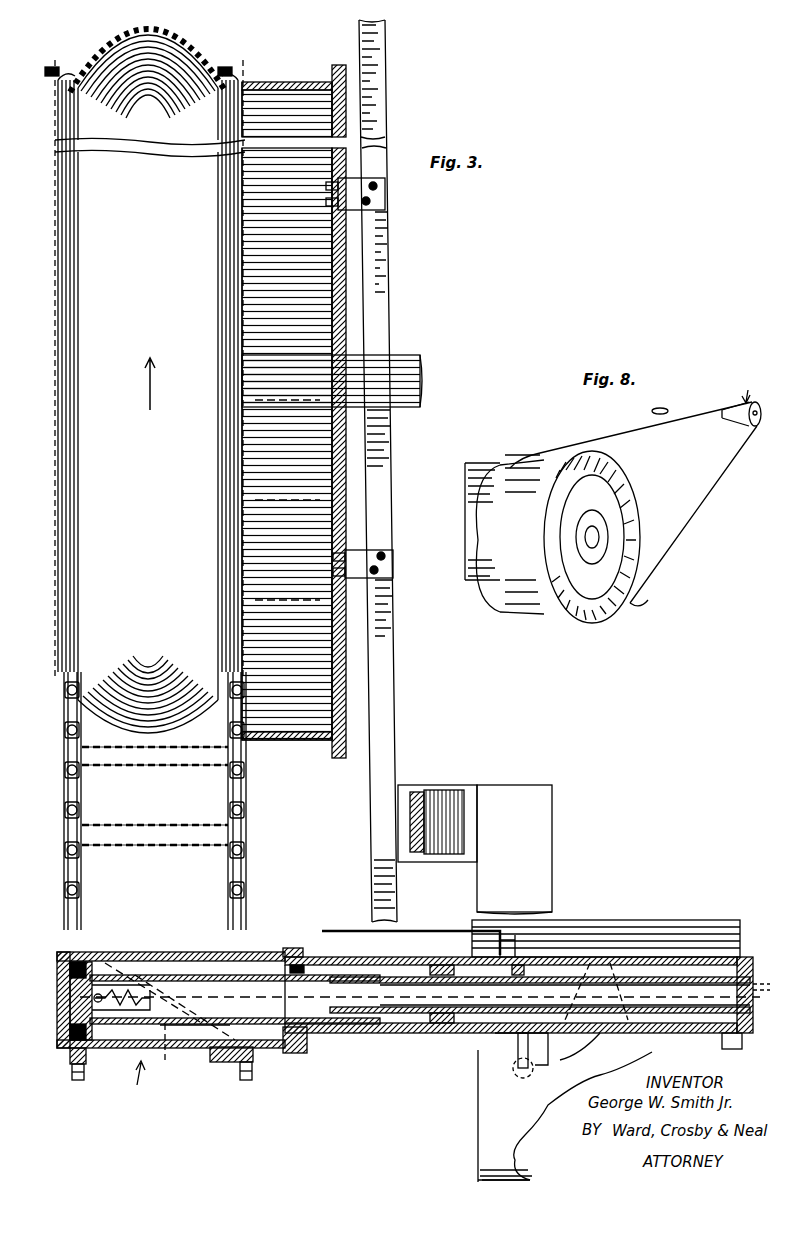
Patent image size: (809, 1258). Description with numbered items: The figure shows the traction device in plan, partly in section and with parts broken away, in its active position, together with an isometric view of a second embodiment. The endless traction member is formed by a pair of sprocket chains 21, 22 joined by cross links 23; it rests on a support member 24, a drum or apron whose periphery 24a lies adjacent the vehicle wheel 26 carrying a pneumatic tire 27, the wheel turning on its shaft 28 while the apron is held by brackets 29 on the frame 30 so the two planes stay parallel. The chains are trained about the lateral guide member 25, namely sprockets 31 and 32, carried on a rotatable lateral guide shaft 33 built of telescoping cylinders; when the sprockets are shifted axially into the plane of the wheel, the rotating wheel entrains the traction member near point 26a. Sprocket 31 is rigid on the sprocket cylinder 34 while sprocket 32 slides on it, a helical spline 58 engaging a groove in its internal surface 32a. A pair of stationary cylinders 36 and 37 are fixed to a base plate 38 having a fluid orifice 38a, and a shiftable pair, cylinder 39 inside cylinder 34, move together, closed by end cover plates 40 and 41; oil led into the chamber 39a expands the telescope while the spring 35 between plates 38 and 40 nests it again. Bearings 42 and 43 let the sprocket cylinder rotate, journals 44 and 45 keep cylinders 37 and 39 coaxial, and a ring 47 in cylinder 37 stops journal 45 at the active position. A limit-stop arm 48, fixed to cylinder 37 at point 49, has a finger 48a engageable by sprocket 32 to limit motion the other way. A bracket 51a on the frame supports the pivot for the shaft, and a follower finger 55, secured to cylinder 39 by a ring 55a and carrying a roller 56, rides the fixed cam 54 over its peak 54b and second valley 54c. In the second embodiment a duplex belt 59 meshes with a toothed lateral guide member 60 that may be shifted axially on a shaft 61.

In FIG. 3, the sprocket chain 21 is at (68, 800).
In FIG. 3, the sprocket chain 22 is at (252, 798).
In FIG. 3, the cross links 23 is at (222, 36).
In FIG. 3, the support member 24 is at (340, 615).
In FIG. 8, the support member 24 is at (476, 488).
In FIG. 3, the periphery 24a is at (272, 82).
In FIG. 3, the lateral guide member 25 is at (131, 1079).
In FIG. 8, the lateral guide member 25 is at (751, 383).
In FIG. 3, the vehicle wheel 26 is at (56, 262).
In FIG. 8, the vehicle wheel 26 is at (620, 600).
In FIG. 3, the entrainment point 26a is at (258, 612).
In FIG. 3, the pneumatic tire 27 is at (150, 384).
In FIG. 8, the pneumatic tire 27 is at (595, 618).
In FIG. 3, the shaft 28 is at (424, 372).
In FIG. 3, the brackets 29 is at (385, 200).
In FIG. 3, the frame 30 is at (386, 295).
In FIG. 3, the sprocket 31 is at (70, 1058).
In FIG. 3, the sprocket 32 is at (255, 1070).
In FIG. 3, the internal surface 32a is at (218, 1055).
In FIG. 3, the lateral guide shaft 33 is at (750, 1010).
In FIG. 3, the sprocket cylinder 34 is at (185, 1040).
In FIG. 3, the spring 35 is at (122, 1010).
In FIG. 3, the cylinder 36 is at (672, 955).
In FIG. 3, the cylinder 37 is at (382, 1033).
In FIG. 3, the base plate 38 is at (752, 958).
In FIG. 3, the fluid orifice 38a is at (754, 980).
In FIG. 3, the cylinder 39 is at (148, 1020).
In FIG. 3, the internal portion 39a is at (108, 1012).
In FIG. 3, the end cover plate 40 is at (70, 990).
In FIG. 3, the end cover plate 41 is at (58, 960).
In FIG. 3, the bearing 42 is at (68, 1032).
In FIG. 3, the bearing 43 is at (300, 1054).
In FIG. 3, the journal 44 is at (300, 968).
In FIG. 3, the journal 45 is at (445, 977).
In FIG. 3, the ring 47 is at (437, 981).
In FIG. 3, the limit-stop arm 48 is at (510, 950).
In FIG. 3, the finger 48a is at (345, 931).
In FIG. 3, the attachment point 49 is at (535, 960).
In FIG. 3, the bracket 51a is at (448, 792).
In FIG. 3, the cam 54 is at (478, 1120).
In FIG. 3, the peak 54b is at (620, 920).
In FIG. 3, the second valley 54c is at (578, 1051).
In FIG. 3, the follower finger 55 is at (515, 1050).
In FIG. 3, the ring 55a is at (495, 1036).
In FIG. 3, the follower roller 56 is at (516, 1076).
In FIG. 3, the helical spline 58 is at (170, 1021).
In FIG. 8, the belt 59 is at (690, 500).
In FIG. 8, the lateral guide member 60 is at (758, 426).
In FIG. 8, the shaft 61 is at (655, 410).